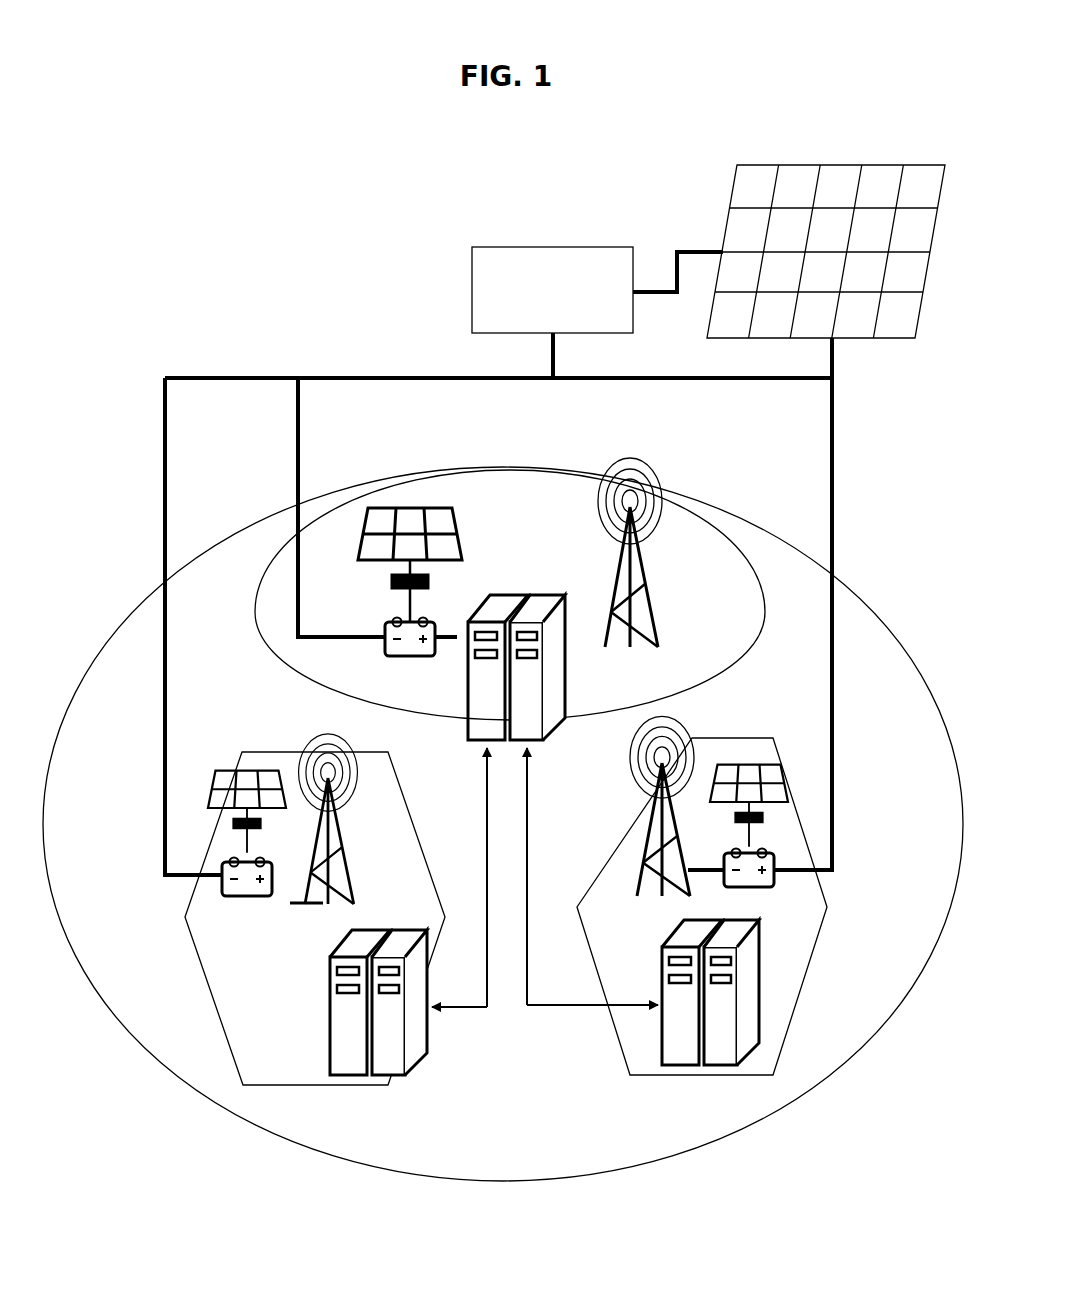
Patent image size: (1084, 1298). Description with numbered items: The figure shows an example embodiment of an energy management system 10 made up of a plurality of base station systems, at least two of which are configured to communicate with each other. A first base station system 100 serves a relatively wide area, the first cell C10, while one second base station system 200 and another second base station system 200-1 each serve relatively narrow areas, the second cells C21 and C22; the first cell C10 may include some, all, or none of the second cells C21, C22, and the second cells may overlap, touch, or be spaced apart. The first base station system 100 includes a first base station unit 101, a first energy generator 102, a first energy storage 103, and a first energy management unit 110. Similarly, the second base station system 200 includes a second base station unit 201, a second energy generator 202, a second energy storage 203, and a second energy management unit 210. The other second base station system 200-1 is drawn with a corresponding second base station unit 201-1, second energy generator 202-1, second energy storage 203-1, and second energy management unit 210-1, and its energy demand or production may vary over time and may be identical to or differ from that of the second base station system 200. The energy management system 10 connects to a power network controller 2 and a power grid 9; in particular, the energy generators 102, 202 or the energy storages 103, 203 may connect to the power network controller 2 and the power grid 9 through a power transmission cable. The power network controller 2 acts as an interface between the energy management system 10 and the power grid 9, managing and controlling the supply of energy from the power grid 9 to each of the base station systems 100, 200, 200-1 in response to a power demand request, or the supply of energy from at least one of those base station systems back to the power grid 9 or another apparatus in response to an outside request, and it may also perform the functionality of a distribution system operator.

The power grid 9 is at (714, 193).
The power network controller 2 is at (597, 290).
The energy management system 10 is at (118, 628).
The first cell C10 is at (274, 580).
The first base station system 100 is at (487, 600).
The first base station unit 101 is at (655, 474).
The first energy generator 102 is at (413, 503).
The first energy storage 103 is at (418, 676).
The first energy management unit 110 is at (522, 613).
The second cell C21 is at (190, 938).
The second base station system 200 is at (305, 898).
The second base station unit 201 is at (366, 799).
The second energy generator 202 is at (234, 750).
The second energy storage 203 is at (254, 920).
The second energy management unit 210 is at (424, 1070).
The second cell C22 is at (622, 1062).
The other second base station system 200-1 is at (743, 884).
The second base station unit 201-1 is at (638, 821).
The second energy generator 202-1 is at (752, 750).
The second energy storage 203-1 is at (786, 891).
The second energy management unit 210-1 is at (772, 997).